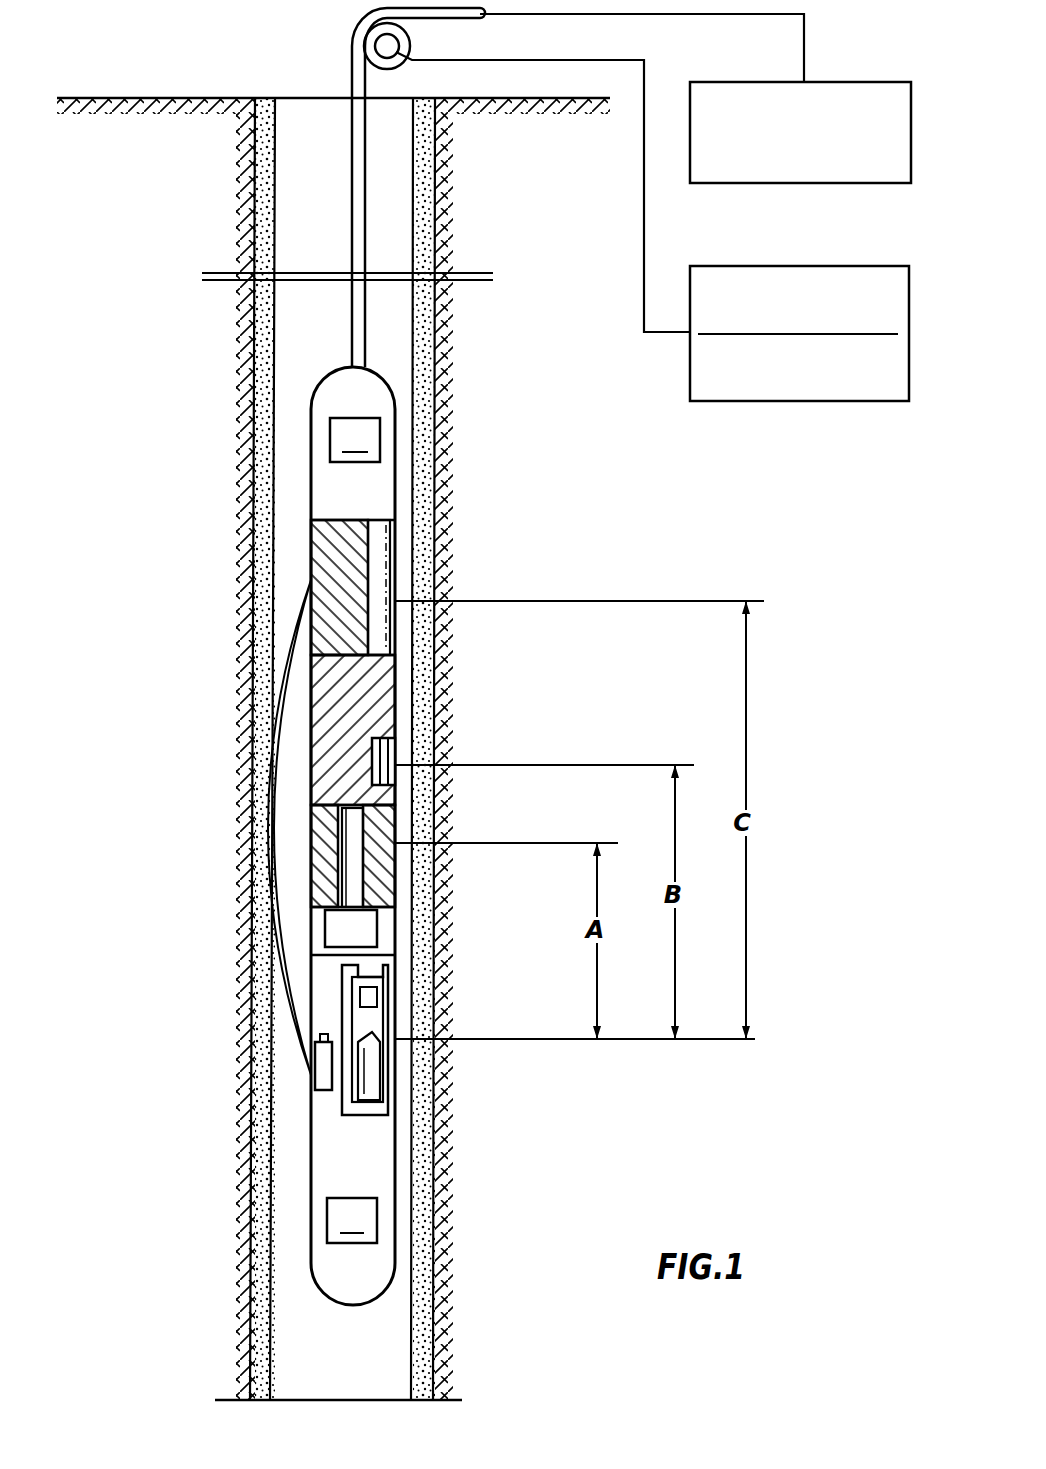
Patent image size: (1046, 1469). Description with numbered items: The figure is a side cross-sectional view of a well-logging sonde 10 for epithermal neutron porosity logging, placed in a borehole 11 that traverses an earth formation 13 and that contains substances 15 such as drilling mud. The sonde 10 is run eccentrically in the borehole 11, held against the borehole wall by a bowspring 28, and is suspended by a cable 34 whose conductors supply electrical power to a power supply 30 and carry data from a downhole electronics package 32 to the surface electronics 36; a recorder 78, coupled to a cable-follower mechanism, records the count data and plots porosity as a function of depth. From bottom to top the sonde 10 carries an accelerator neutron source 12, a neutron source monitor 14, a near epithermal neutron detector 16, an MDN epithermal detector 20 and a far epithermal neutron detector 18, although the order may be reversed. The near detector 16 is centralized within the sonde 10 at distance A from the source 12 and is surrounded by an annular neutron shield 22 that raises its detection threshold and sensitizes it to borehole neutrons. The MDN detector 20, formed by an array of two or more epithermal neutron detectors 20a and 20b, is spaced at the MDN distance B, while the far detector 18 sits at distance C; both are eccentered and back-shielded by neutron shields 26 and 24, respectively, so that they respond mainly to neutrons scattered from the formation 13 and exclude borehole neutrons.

The sonde 10 is at (398, 484).
The borehole 11 is at (303, 116).
The accelerator neutron source 12 is at (388, 1025).
The earth formation 13 is at (240, 476).
The neutron source monitor 14 is at (313, 1076).
The substances 15 is at (250, 660).
The near epithermal neutron detector 16 is at (366, 876).
The far epithermal neutron detector 18 is at (398, 567).
The MDN epithermal detector 20 is at (333, 753).
The epithermal neutron detector 20a is at (372, 745).
The epithermal neutron detector 20b is at (398, 775).
The annular neutron shield 22 is at (311, 858).
The neutron shield 24 is at (311, 548).
The neutron shield 26 is at (311, 777).
The bowspring 28 is at (282, 989).
The power supply 30 is at (352, 1220).
The downhole electronics package 32 is at (355, 440).
The cable 34 is at (352, 44).
The surface electronics 36 is at (856, 78).
The recorder 78 is at (848, 403).